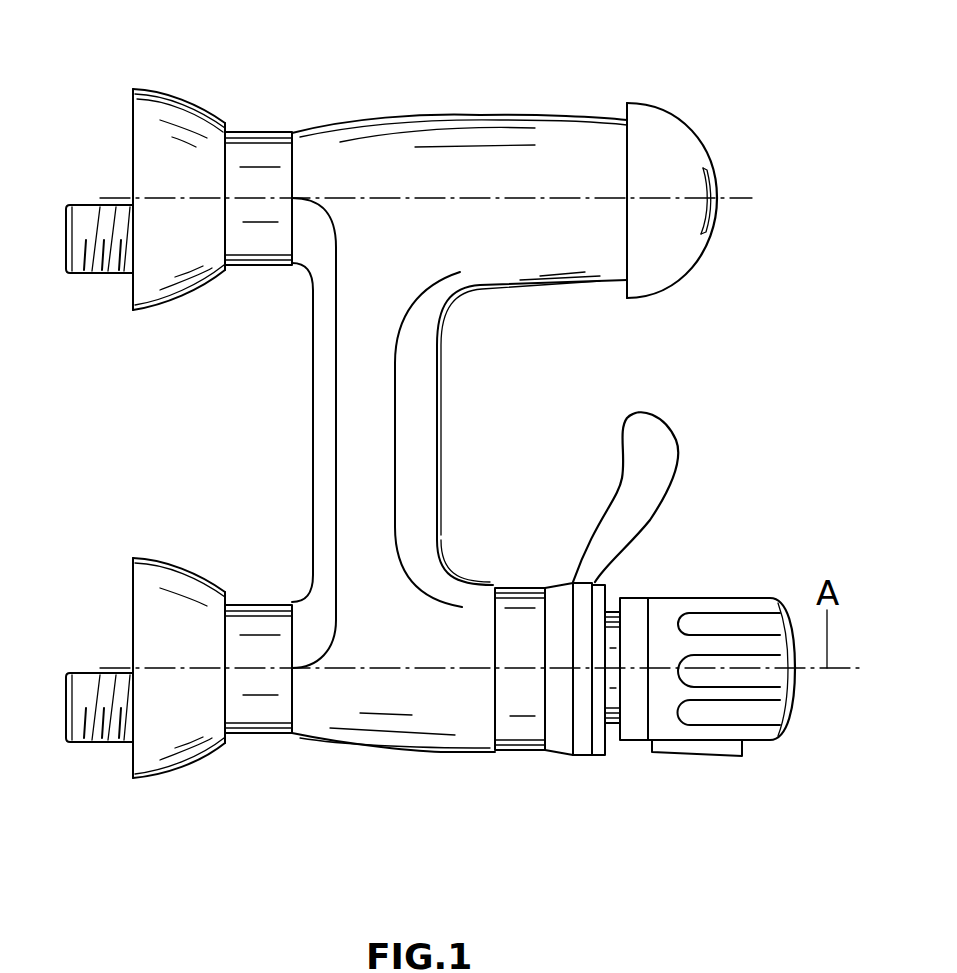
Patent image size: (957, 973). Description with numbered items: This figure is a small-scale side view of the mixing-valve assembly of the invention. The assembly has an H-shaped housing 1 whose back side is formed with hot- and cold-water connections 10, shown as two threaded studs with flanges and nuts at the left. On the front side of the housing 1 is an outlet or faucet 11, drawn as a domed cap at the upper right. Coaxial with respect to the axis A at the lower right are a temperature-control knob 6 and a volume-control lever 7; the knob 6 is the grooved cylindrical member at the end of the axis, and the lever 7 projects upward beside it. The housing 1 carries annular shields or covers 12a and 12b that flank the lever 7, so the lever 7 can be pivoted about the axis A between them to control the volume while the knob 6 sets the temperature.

The housing 1 is at (356, 428).
The temperature-control knob 6 is at (768, 740).
The volume-control lever 7 is at (657, 460).
The hot- and cold-water connections 10 is at (90, 222).
The outlet or faucet 11 is at (485, 133).
The annular shield or cover 12a is at (550, 755).
The annular shield or cover 12b is at (598, 745).